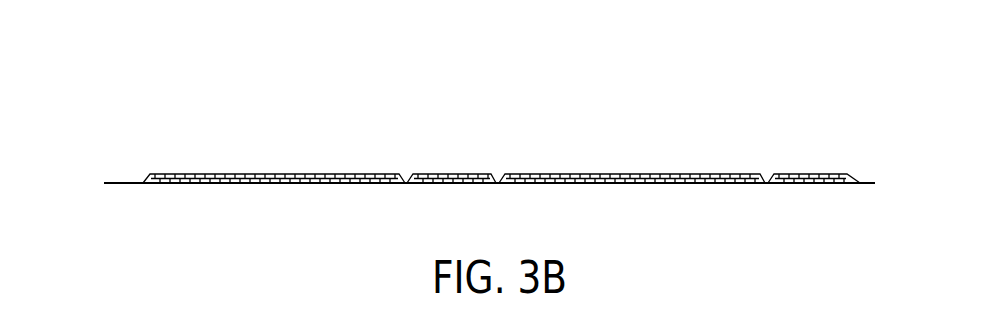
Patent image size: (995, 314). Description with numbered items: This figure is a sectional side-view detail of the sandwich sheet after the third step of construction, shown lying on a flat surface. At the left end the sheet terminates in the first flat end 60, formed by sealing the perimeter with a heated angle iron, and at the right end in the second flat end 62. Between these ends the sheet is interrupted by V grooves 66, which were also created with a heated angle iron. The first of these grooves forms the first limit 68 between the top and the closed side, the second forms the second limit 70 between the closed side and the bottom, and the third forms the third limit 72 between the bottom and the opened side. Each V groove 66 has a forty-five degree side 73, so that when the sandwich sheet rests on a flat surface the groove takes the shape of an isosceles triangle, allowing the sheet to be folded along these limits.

The first flat end 60 is at (119, 183).
The second flat end 62 is at (862, 183).
The V grooves 66 is at (408, 178).
The first limit 68 is at (406, 181).
The second limit 70 is at (497, 181).
The third limit 72 is at (764, 181).
The 45° side 73 is at (497, 178).